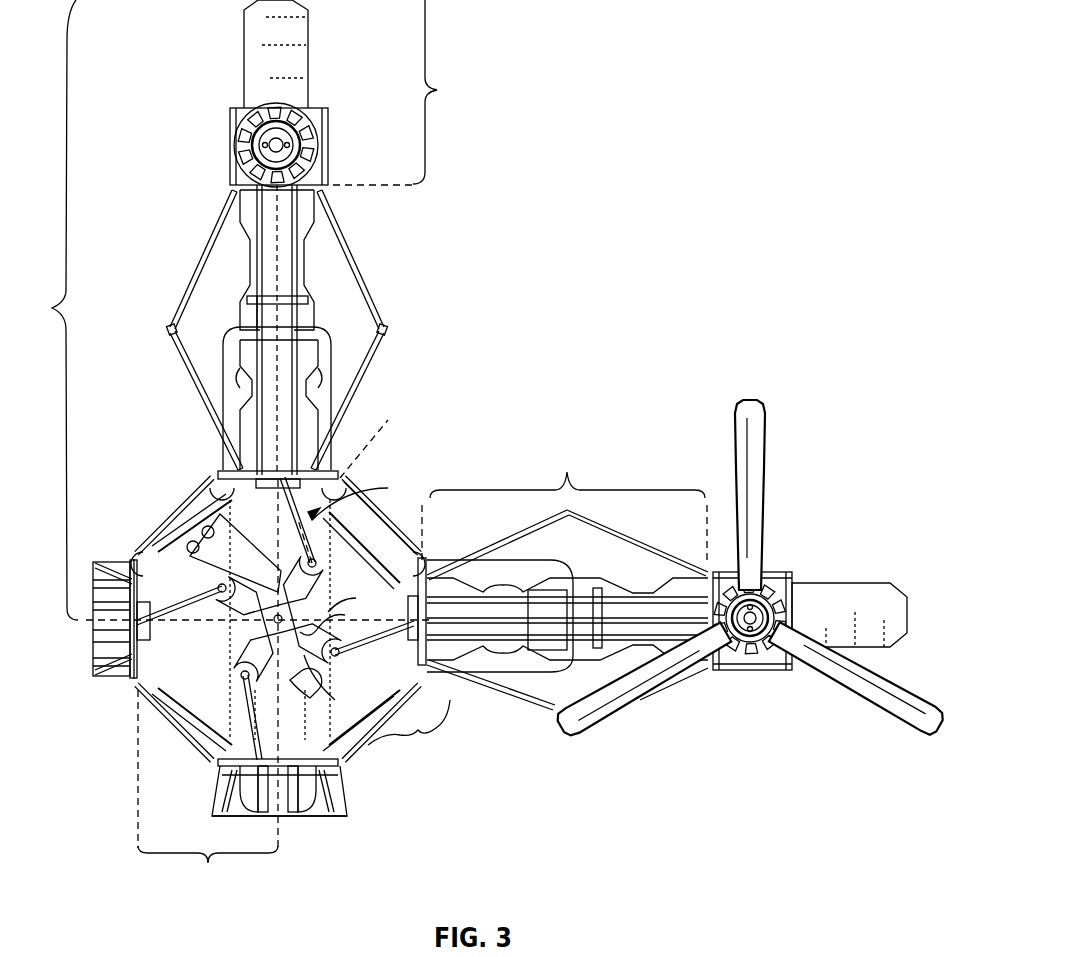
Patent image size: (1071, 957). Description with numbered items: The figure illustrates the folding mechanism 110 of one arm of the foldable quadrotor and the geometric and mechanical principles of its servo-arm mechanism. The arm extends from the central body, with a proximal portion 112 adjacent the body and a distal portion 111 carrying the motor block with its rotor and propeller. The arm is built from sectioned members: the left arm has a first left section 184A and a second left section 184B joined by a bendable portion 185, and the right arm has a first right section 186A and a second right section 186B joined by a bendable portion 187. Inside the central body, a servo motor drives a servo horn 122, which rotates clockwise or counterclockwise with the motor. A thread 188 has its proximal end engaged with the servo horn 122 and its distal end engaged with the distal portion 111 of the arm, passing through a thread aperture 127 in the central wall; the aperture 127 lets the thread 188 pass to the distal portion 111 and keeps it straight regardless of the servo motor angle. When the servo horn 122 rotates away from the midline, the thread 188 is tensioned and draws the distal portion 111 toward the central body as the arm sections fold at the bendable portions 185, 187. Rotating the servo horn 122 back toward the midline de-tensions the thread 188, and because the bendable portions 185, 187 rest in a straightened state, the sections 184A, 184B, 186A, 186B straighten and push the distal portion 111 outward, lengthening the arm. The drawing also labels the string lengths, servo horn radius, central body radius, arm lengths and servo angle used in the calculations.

The folding mechanism 110 is at (606, 44).
The distal portion 111 is at (328, 82).
The proximal portion 112 is at (177, 468).
The servo horn 122 is at (310, 643).
The thread aperture 127 is at (340, 478).
The first left section 184A is at (200, 396).
The second left section 184B is at (210, 256).
The bendable portion 185 is at (163, 330).
The first right section 186A is at (378, 372).
The second right section 186B is at (348, 244).
The bendable portion 187 is at (394, 330).
The thread 188 is at (302, 300).